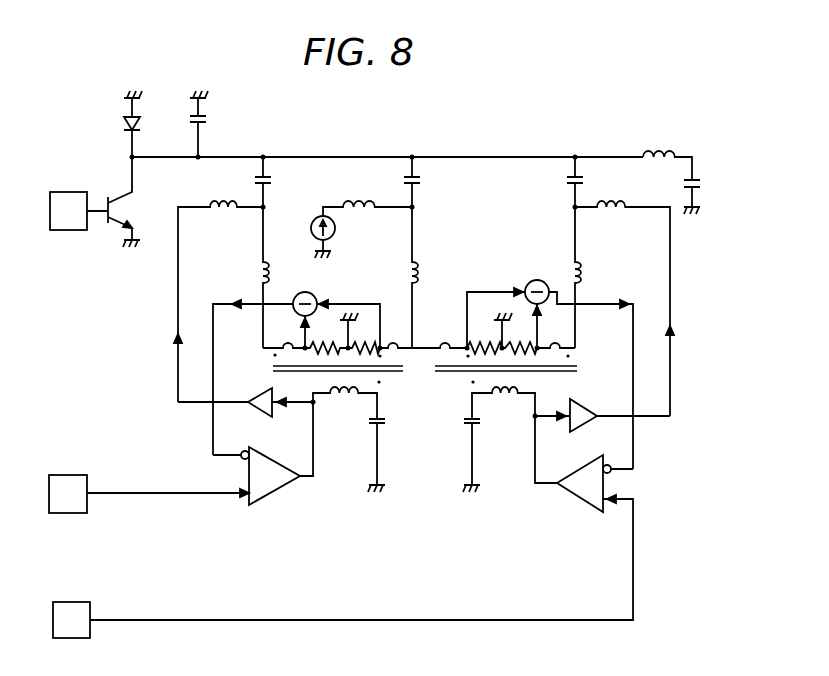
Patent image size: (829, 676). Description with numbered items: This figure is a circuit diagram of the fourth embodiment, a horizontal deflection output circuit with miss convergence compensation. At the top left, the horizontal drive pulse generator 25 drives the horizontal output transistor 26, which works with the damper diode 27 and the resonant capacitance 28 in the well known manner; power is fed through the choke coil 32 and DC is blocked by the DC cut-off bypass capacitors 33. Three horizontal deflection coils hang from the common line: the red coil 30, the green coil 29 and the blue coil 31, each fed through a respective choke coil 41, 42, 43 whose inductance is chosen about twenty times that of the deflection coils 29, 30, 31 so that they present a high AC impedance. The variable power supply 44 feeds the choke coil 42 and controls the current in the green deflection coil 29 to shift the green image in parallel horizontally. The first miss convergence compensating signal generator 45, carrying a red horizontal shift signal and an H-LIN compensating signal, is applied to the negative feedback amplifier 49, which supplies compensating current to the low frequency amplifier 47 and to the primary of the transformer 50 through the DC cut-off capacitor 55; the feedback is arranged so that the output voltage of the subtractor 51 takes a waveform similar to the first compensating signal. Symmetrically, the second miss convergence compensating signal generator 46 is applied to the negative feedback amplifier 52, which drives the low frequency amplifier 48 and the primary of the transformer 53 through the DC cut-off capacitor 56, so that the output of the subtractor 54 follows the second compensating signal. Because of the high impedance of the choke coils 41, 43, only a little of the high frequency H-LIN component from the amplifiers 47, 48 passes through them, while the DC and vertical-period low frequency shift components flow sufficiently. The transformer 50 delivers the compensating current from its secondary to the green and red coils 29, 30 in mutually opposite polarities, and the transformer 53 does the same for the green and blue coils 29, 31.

The horizontal drive pulse generator 25 is at (70, 192).
The horizontal output transistor 26 is at (120, 214).
The damper diode 27 is at (122, 127).
The resonant capacitance 28 is at (208, 121).
The horizontal deflection coil of DY for green 29 is at (418, 270).
The horizontal deflection coil of DY for red 30 is at (262, 270).
The horizontal deflection coil of DY for blue 31 is at (582, 270).
The choke coil for power supply 32 is at (658, 150).
The DC cut-off bypass capacitor 33 is at (273, 181).
The choke coil 41 is at (224, 205).
The choke coil 42 is at (357, 205).
The choke coil 43 is at (613, 205).
The variable power supply 44 is at (336, 229).
The first miss convergence compensating signal generator 45 is at (68, 475).
The second miss convergence compensating signal generator 46 is at (73, 602).
The low frequency amplifier 47 is at (260, 413).
The low frequency amplifier 48 is at (586, 428).
The negative feedback amplifier 49 is at (276, 487).
The transformer 50 is at (270, 369).
The subtractor 51 is at (300, 298).
The negative feedback amplifier 52 is at (578, 501).
The transformer 53 is at (580, 369).
The subtractor 54 is at (537, 279).
The DC cut-off capacitor 55 is at (387, 422).
The DC cut-off capacitor 56 is at (482, 422).